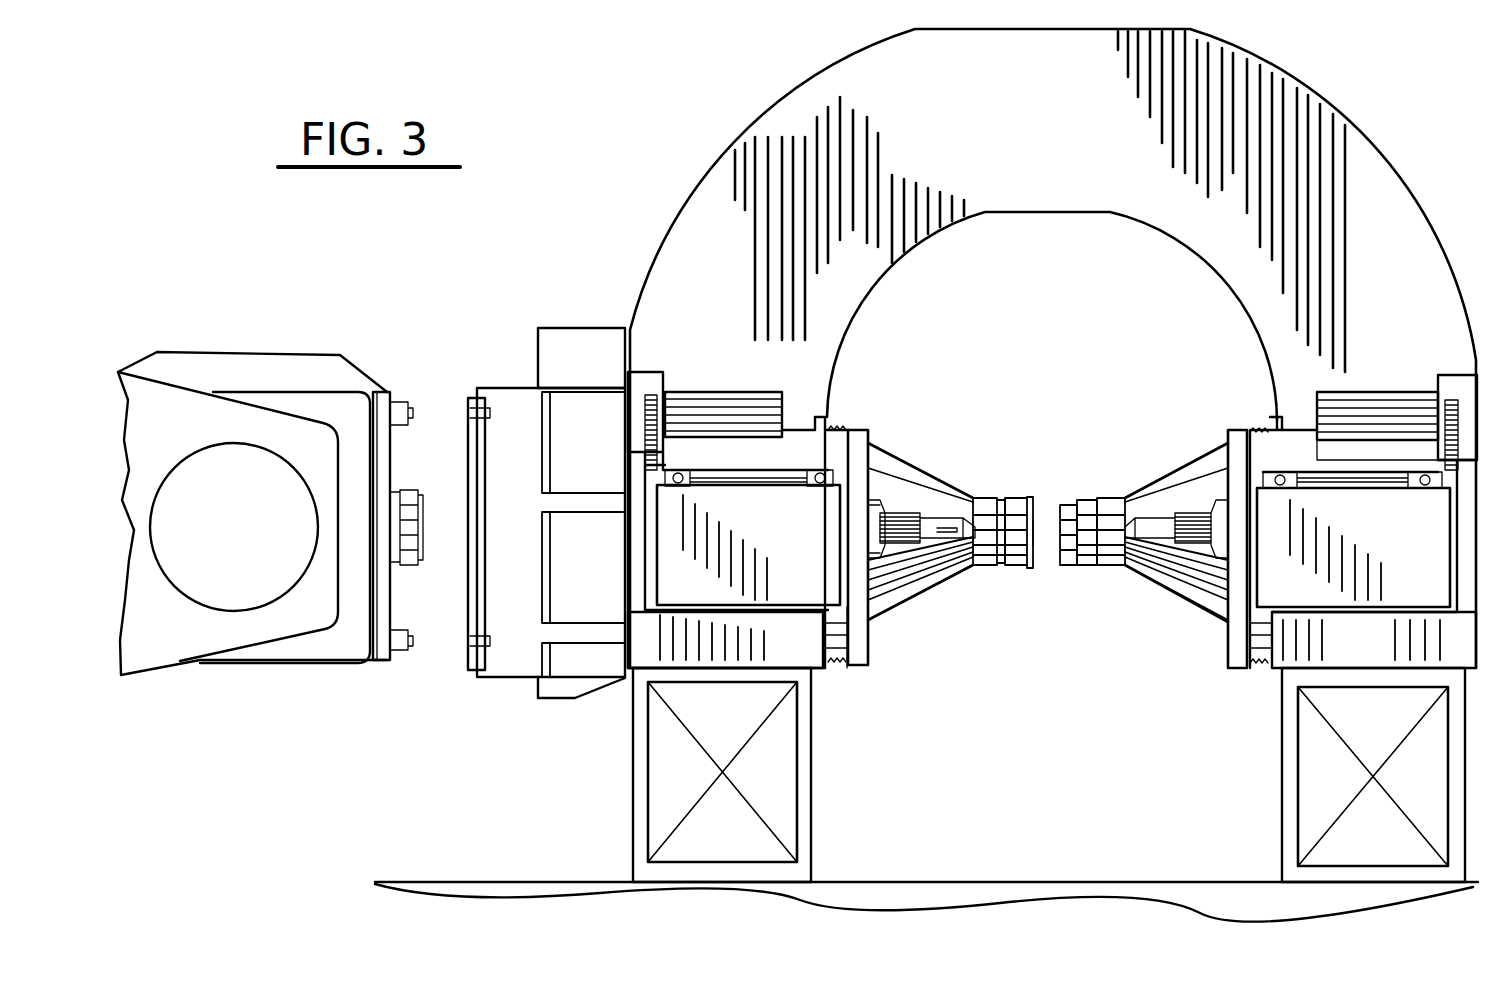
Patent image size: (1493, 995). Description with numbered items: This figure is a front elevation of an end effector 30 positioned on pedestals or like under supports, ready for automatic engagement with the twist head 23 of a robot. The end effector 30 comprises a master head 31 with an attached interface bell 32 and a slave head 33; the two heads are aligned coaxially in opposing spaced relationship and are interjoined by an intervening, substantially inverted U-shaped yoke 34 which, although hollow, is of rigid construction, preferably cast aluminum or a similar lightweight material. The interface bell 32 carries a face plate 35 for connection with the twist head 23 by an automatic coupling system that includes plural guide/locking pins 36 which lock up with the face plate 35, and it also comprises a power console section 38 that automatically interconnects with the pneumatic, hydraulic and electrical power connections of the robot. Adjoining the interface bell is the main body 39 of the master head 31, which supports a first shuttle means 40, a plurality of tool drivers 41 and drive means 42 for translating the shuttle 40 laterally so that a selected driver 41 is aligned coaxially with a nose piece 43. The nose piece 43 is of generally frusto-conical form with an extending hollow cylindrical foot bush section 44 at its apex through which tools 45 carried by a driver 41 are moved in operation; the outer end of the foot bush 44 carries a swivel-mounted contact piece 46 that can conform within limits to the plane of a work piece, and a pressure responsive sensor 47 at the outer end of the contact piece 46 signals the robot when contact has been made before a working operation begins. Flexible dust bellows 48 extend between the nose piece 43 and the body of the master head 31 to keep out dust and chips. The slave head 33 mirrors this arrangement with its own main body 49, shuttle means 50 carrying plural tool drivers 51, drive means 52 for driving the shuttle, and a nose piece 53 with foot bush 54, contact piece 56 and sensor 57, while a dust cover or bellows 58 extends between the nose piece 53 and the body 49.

The twist head 23 is at (270, 345).
The end effector 30 is at (926, 475).
The master head 31 is at (628, 680).
The interface bell 32 is at (507, 682).
The slave head 33 is at (1272, 678).
The yoke 34 is at (815, 82).
The face plate 35 is at (470, 648).
The guide/locking pins 36 is at (405, 410).
The power console section 38 is at (567, 326).
The main body 39 is at (795, 641).
The first shuttle means 40 is at (800, 543).
The tool drivers 41 is at (878, 548).
The drive means 42 is at (665, 372).
The nose piece 43 is at (910, 460).
The foot bush section 44 is at (990, 568).
The tools 45 is at (937, 565).
The contact piece 46 is at (1025, 503).
The pressure responsive sensor 47 is at (1040, 560).
The dust bellows 48 is at (842, 424).
The main body 49 is at (1368, 645).
The shuttle means 50 is at (1410, 543).
The tool drivers 51 is at (1223, 623).
The drive means 52 is at (1415, 390).
The nose piece 53 is at (1192, 618).
The foot bush 54 is at (1120, 570).
The contact piece 56 is at (1072, 498).
The sensor 57 is at (1062, 507).
The dust cover or bellows 58 is at (1250, 430).